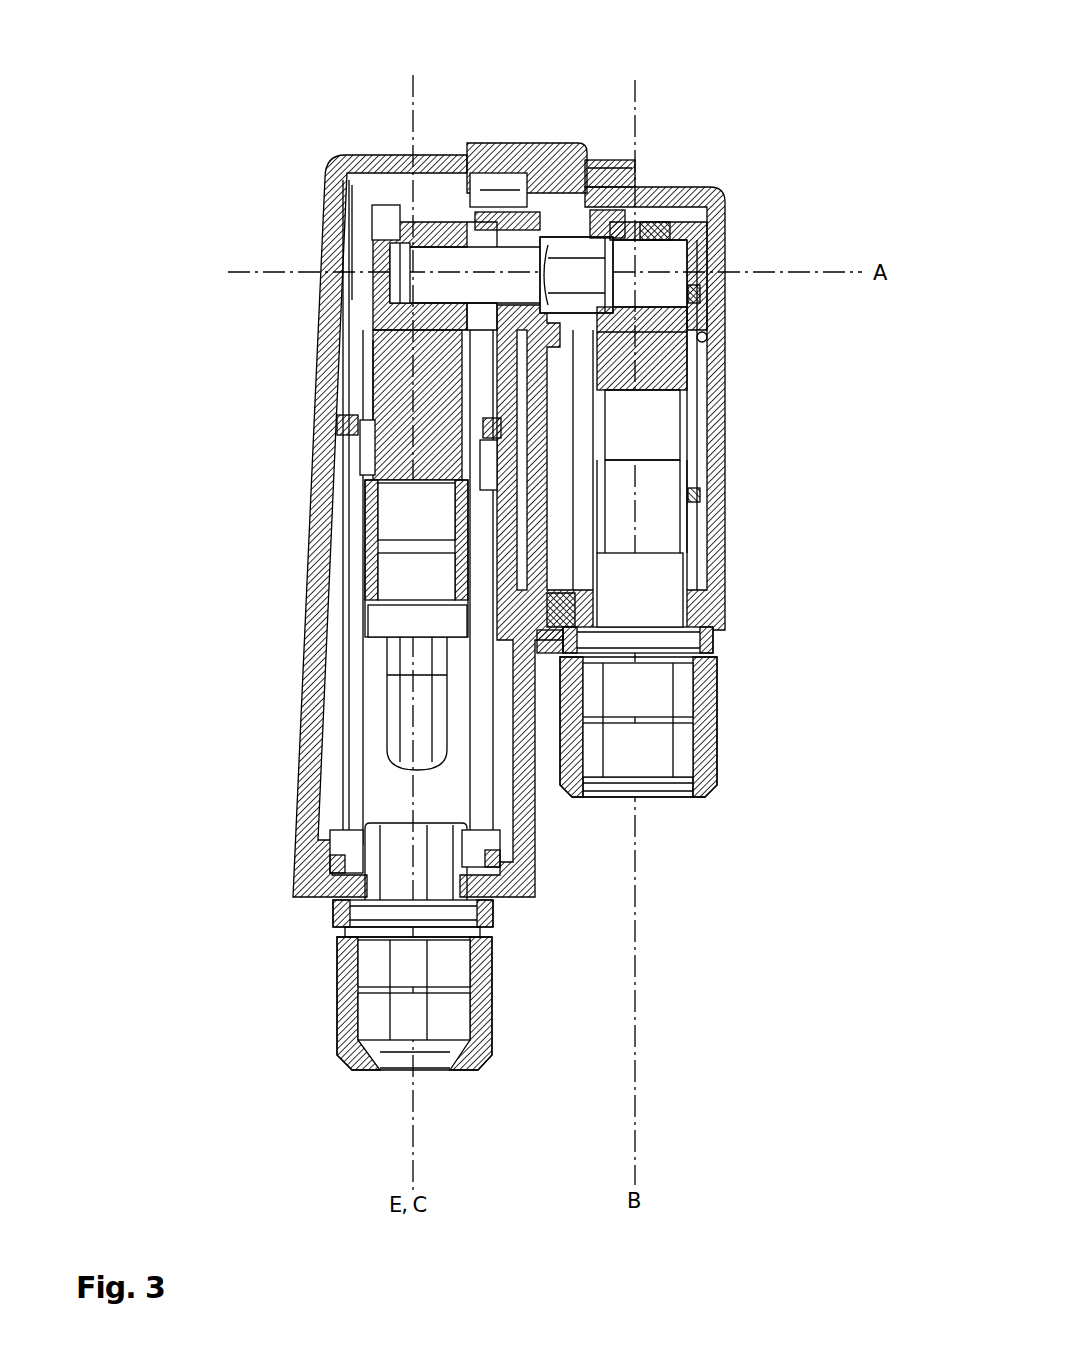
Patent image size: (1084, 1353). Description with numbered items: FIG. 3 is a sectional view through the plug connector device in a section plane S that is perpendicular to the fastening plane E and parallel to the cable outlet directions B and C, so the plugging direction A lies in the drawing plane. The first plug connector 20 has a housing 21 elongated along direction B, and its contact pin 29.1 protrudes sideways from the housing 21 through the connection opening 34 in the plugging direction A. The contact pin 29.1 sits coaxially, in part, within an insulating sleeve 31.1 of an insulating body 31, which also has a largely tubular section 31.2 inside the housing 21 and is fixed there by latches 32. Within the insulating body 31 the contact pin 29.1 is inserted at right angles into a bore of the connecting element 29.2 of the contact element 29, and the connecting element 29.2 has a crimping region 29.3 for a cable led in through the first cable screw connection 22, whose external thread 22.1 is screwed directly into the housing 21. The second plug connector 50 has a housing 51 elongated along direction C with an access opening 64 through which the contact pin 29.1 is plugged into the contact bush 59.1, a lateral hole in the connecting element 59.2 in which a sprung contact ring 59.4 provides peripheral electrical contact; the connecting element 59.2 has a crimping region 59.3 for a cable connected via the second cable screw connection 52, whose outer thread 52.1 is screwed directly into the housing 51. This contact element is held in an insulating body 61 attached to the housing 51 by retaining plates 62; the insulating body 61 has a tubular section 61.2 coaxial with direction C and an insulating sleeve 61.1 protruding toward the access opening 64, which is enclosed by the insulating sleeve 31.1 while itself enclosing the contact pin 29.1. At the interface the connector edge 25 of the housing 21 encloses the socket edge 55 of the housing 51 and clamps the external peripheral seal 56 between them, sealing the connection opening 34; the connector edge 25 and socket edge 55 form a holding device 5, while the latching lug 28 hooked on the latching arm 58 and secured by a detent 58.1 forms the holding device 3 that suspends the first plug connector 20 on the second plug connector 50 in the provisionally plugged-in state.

The holding device 3 is at (604, 142).
The holding device 5 is at (557, 184).
The first plug connector 20 is at (742, 187).
The housing 21 is at (723, 290).
The first cable screw connection 22 is at (713, 760).
The external thread 22.1 is at (590, 630).
The connector edge 25 is at (553, 200).
The latching lug 28 is at (548, 192).
The contact element 29 is at (633, 283).
The contact pin 29.1 is at (470, 212).
The connecting element 29.2 is at (660, 347).
The crimping region 29.3 is at (655, 410).
The insulating body 31 is at (727, 240).
The insulating sleeve 31.1 is at (495, 262).
The tubular section 31.2 is at (640, 500).
The latches 32 is at (645, 232).
The connection opening 34 is at (585, 580).
The second plug connector 50 is at (300, 338).
The housing 51 is at (355, 427).
The second cable screw connection 52 is at (345, 990).
The outer thread 52.1 is at (355, 885).
The socket edge 55 is at (730, 200).
The external peripheral seal 56 is at (510, 215).
The latching arm 58 is at (578, 212).
The detent 58.1 is at (562, 202).
The contact bush 59.1 is at (395, 232).
The connecting element 59.2 is at (362, 497).
The crimping region 59.3 is at (362, 515).
The sprung contact ring 59.4 is at (385, 272).
The insulating body 61 is at (390, 258).
The insulating sleeve 61.1 is at (452, 232).
The tubular section 61.2 is at (372, 375).
The retaining plates 62 is at (388, 456).
The access opening 64 is at (515, 215).